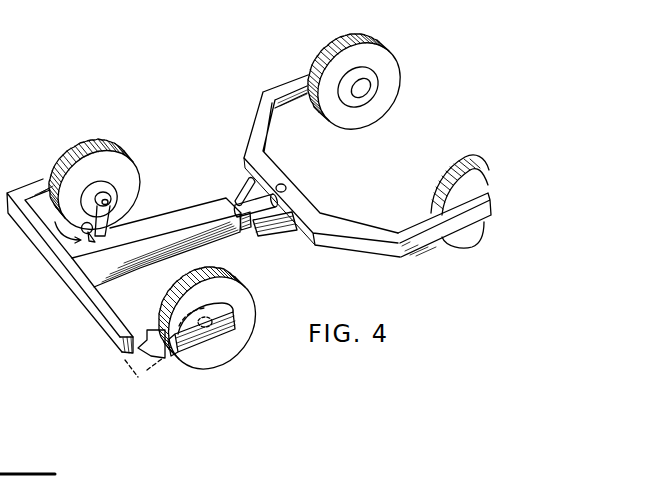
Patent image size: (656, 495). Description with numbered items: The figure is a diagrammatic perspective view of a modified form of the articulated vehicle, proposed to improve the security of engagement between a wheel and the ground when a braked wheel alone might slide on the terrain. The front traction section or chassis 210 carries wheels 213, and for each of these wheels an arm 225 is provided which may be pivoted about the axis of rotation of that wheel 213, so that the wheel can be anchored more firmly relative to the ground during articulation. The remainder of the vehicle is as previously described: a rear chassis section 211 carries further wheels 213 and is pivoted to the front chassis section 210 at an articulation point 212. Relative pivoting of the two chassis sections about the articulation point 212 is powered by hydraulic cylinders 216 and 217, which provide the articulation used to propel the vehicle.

The traction section or chassis 210 is at (82, 281).
The rear chassis section 211 is at (258, 122).
The articulation point 212 is at (288, 183).
The wheels 213 is at (115, 144).
The hydraulic cylinder 216 is at (277, 234).
The hydraulic cylinder 217 is at (242, 190).
The arm 225 is at (115, 212).